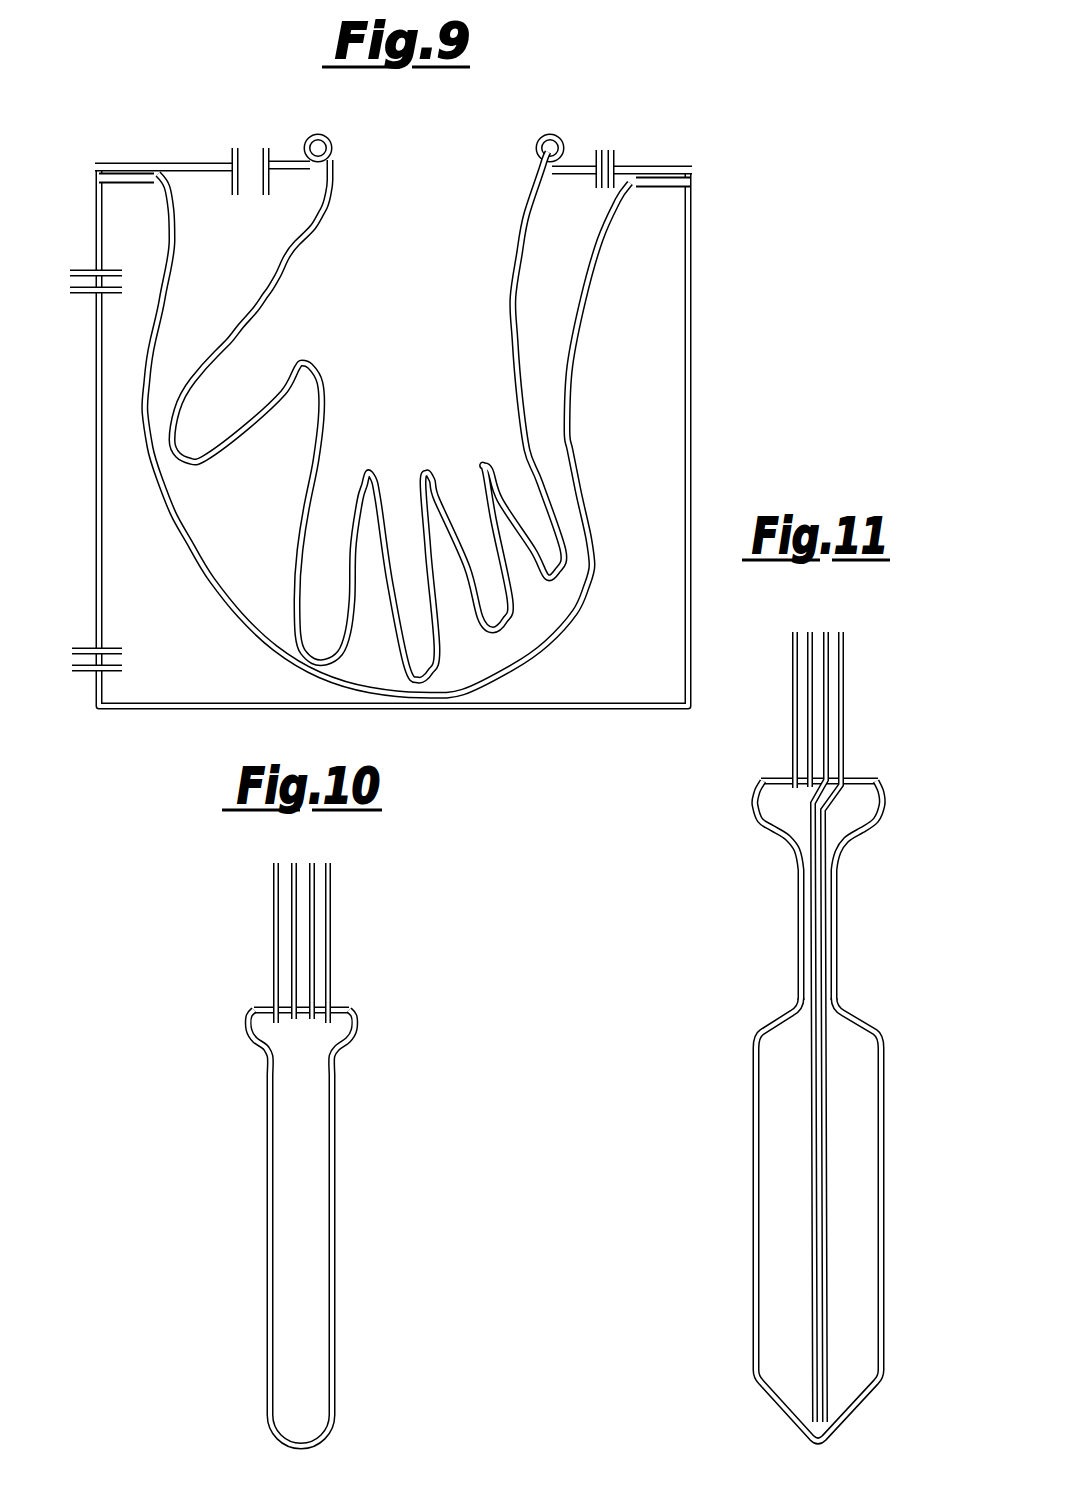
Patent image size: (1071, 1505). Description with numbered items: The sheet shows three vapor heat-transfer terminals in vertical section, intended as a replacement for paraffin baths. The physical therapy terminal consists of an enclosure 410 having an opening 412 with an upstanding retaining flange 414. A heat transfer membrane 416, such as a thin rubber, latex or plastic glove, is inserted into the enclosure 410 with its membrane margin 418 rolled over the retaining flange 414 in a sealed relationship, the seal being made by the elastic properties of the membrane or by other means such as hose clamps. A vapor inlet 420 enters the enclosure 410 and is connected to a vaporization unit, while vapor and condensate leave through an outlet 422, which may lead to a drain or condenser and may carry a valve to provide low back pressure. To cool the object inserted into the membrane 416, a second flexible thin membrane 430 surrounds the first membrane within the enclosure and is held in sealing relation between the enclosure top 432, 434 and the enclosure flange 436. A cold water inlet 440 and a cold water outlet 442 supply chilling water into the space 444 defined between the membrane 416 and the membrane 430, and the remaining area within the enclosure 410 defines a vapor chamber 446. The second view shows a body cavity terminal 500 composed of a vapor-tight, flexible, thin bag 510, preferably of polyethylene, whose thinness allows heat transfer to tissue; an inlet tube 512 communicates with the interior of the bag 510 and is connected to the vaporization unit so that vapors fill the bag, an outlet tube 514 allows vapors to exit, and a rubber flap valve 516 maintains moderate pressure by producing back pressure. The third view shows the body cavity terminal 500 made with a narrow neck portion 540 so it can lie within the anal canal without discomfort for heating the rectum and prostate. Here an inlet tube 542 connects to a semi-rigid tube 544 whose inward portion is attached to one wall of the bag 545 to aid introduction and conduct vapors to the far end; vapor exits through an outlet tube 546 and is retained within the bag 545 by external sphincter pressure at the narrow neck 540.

In FIG. 9, the enclosure 410 is at (96, 415).
In FIG. 9, the opening 412 is at (439, 145).
In FIG. 9, the retaining flange 414 is at (326, 138).
In FIG. 9, the heat transfer membrane 416 is at (290, 252).
In FIG. 9, the membrane margin 418 is at (302, 158).
In FIG. 9, the vapor inlet 420 is at (74, 294).
In FIG. 9, the outlet 422 is at (75, 672).
In FIG. 9, the second membrane 430 is at (578, 368).
In FIG. 9, the enclosure top 432 is at (128, 162).
In FIG. 9, the enclosure top 434 is at (673, 168).
In FIG. 9, the enclosure flange 436 is at (128, 183).
In FIG. 9, the cold water inlet 440 is at (232, 158).
In FIG. 9, the cold water outlet 442 is at (614, 168).
In FIG. 9, the space 444 is at (568, 278).
In FIG. 9, the vapor chamber 446 is at (178, 642).
In FIG. 10, the body cavity terminal 500 is at (205, 1181).
In FIG. 11, the body cavity terminal 500 is at (708, 1170).
In FIG. 10, the bag 510 is at (338, 1238).
In FIG. 10, the inlet tube 512 is at (332, 945).
In FIG. 10, the outlet tube 514 is at (277, 920).
In FIG. 10, the rubber flap valve 516 is at (290, 960).
In FIG. 11, the narrow neck portion 540 is at (838, 936).
In FIG. 11, the inlet tube 542 is at (845, 700).
In FIG. 11, the semi-rigid tube 544 is at (824, 830).
In FIG. 11, the bag 545 is at (757, 1250).
In FIG. 11, the outlet tube 546 is at (793, 707).